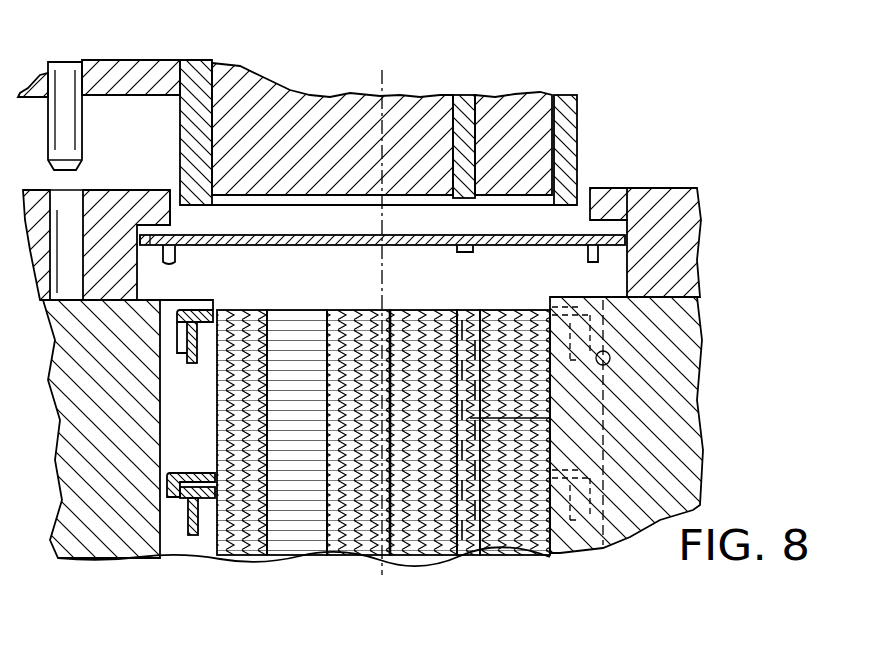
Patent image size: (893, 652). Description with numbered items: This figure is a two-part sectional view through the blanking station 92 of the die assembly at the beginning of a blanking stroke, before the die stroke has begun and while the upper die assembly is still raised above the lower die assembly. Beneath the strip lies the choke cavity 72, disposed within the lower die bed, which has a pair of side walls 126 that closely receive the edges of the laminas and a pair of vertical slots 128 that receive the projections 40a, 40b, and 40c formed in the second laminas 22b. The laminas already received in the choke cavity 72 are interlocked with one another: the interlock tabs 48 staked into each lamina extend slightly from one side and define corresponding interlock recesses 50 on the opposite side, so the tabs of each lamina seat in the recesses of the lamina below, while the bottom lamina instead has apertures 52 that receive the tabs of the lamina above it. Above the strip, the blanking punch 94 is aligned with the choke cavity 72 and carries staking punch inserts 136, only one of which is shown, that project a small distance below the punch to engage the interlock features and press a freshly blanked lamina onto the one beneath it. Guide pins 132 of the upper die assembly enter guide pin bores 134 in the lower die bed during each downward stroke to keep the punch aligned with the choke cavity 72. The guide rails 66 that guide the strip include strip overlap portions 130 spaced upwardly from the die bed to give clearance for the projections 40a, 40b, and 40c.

The blanking station 92 is at (655, 93).
The blanking punch 94 is at (333, 115).
The staking punch inserts 136 is at (463, 112).
The guide pins 132 is at (78, 120).
The guide pin bores 134 is at (58, 213).
The guide rails 66 is at (107, 243).
The strip overlap portions 130 is at (161, 207).
The second lamina 22b is at (352, 240).
The interlock tabs 48 is at (468, 250).
The projection 40c is at (168, 257).
The interlock recesses 50 is at (464, 238).
The apertures 52 is at (560, 418).
The vertical slots 128 is at (158, 427).
The side walls 126 is at (560, 440).
The projection 40b is at (180, 334).
The projection 40a is at (188, 363).
The choke cavity 72 is at (303, 288).